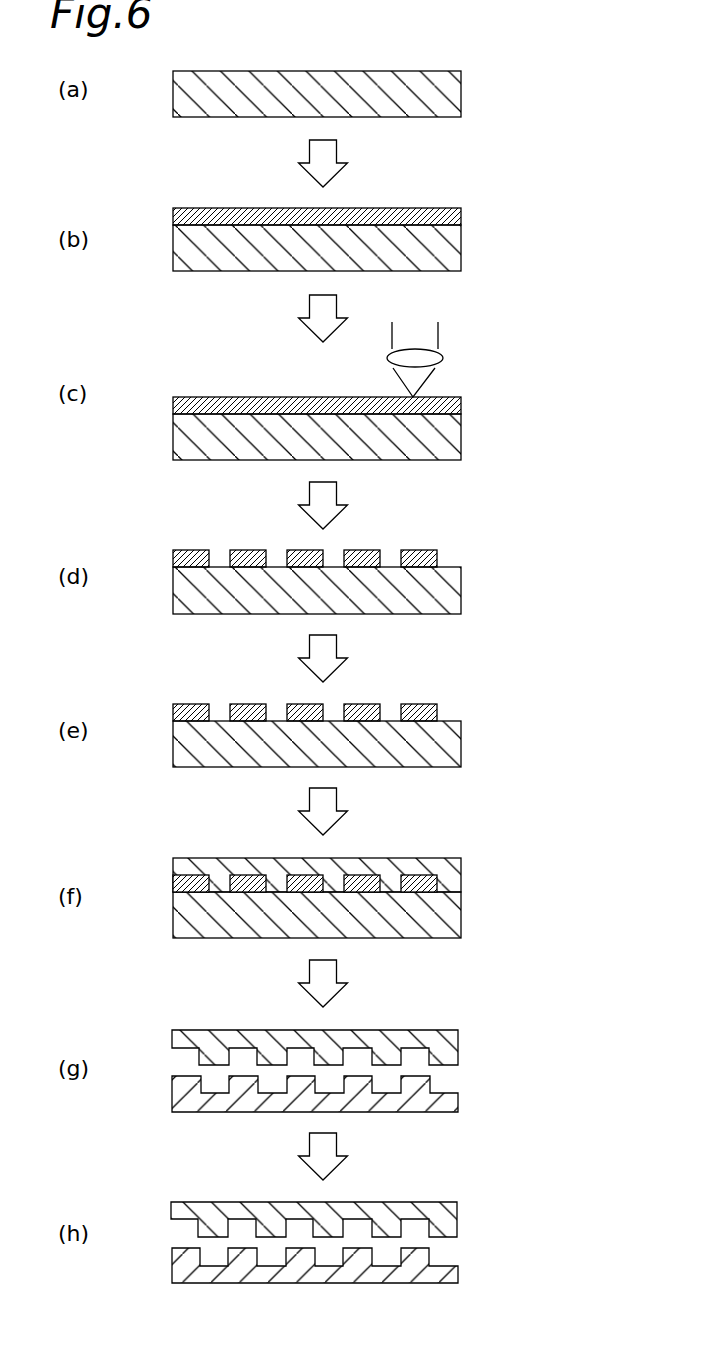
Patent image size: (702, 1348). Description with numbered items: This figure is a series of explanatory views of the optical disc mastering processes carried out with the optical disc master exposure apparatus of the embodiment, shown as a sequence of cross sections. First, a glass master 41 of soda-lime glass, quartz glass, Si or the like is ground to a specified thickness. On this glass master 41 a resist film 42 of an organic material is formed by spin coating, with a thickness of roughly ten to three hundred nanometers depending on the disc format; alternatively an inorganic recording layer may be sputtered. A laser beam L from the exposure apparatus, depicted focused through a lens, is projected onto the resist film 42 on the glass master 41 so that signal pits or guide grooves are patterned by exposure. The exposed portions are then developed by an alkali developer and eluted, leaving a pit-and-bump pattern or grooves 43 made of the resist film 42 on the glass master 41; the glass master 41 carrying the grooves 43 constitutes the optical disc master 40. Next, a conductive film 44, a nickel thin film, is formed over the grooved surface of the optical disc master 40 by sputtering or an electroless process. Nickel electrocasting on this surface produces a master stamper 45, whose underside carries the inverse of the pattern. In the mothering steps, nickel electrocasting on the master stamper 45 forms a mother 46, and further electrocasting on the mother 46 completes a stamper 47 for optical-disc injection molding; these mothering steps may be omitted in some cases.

The optical disc master 40 is at (150, 392).
The glass master 41 is at (450, 93).
The resist film 42 is at (445, 210).
The grooves 43 is at (440, 554).
The conductive film 44 is at (435, 708).
The master stamper 45 is at (442, 862).
The mother 46 is at (457, 1103).
The stamper 47 is at (457, 1210).
The laser beam L is at (427, 380).